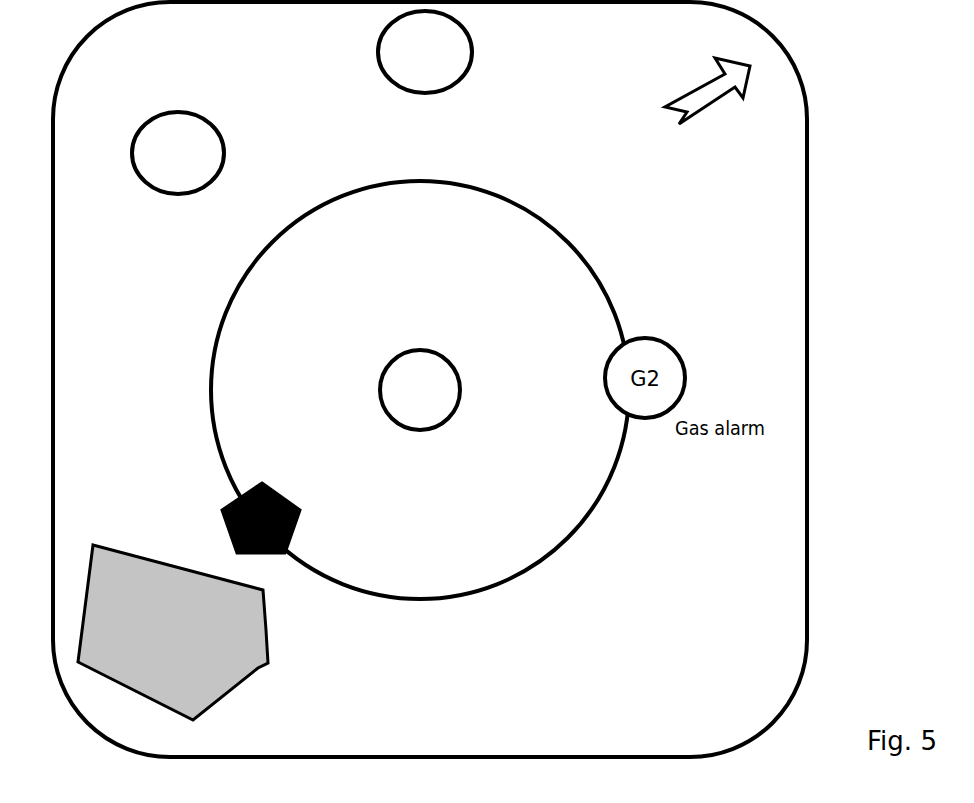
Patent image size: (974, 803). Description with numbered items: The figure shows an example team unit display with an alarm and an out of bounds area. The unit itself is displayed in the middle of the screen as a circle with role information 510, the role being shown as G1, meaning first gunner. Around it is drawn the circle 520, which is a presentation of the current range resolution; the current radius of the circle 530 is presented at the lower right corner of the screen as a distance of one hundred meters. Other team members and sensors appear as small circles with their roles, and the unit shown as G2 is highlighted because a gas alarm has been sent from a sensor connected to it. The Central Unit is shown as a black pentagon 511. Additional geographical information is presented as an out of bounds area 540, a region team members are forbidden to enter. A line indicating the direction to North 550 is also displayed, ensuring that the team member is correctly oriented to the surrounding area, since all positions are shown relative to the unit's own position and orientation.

The role information 510 is at (440, 401).
The black pentagon 511 is at (287, 518).
The circle 520 is at (434, 390).
The current radius of the circle 530 is at (430, 379).
The out of bounds areas 540 is at (181, 635).
The line indicating the direction to North 550 is at (696, 120).